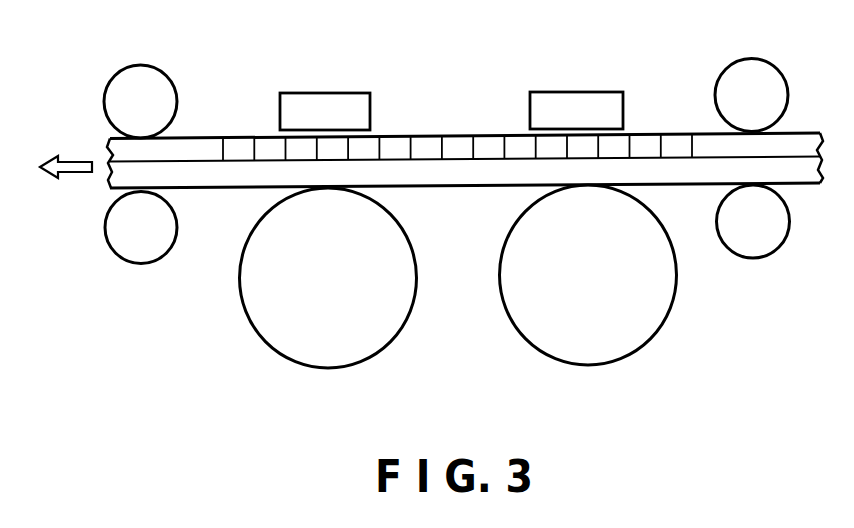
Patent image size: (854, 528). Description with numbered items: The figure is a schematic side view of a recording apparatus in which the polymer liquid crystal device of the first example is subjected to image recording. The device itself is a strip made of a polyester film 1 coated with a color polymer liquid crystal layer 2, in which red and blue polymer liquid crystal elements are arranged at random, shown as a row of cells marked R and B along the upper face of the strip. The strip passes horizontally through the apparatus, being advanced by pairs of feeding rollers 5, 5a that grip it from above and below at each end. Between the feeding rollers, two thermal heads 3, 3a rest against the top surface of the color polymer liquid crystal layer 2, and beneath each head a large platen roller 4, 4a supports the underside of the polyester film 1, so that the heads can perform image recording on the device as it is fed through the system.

The polyester film 1 is at (798, 172).
The color polymer liquid crystal layer 2 is at (800, 143).
The thermal head 3 is at (330, 102).
The thermal head 3a is at (583, 102).
The platen roller 4 is at (382, 330).
The platen roller 4a is at (643, 327).
The feeding roller 5 is at (148, 82).
The feeding roller 5a is at (145, 250).